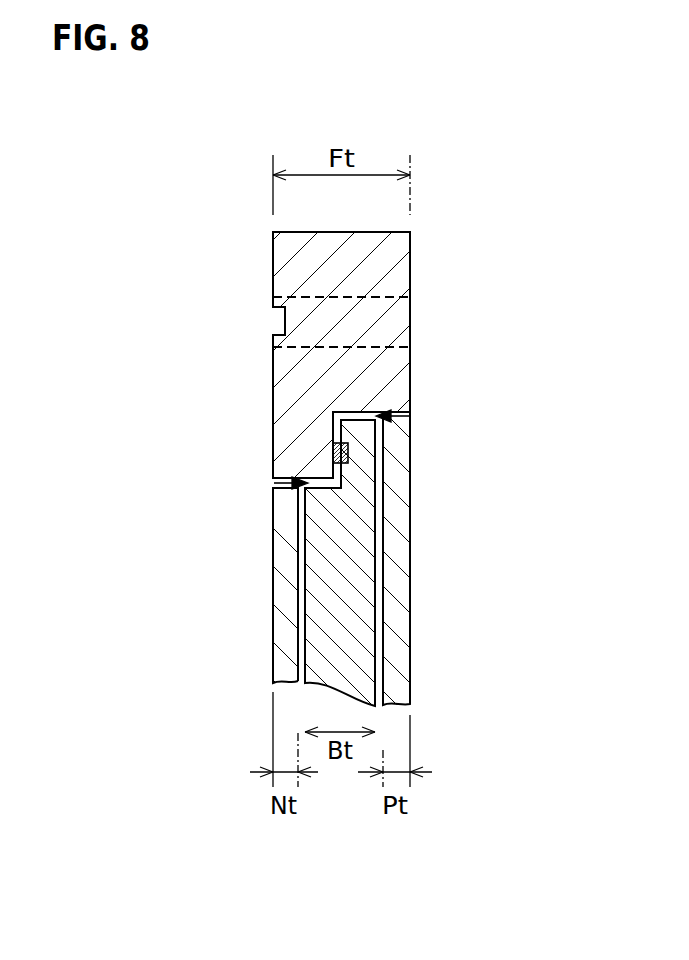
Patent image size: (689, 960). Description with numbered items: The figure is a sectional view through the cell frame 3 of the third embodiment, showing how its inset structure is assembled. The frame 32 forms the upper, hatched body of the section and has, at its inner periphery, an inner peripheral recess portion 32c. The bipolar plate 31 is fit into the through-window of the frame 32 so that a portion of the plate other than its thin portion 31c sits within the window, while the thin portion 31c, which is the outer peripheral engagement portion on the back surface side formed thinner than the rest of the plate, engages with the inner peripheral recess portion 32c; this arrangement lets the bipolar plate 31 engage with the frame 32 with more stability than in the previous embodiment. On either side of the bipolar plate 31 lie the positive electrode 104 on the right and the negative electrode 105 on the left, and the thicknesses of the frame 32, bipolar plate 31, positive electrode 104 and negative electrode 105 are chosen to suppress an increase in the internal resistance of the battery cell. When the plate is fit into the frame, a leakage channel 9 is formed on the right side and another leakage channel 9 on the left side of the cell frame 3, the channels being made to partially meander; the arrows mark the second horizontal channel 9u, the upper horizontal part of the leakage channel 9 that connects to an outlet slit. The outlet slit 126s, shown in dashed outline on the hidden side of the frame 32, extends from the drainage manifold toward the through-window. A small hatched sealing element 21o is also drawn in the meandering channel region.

The cell frame 3 is at (250, 205).
The frame 32 is at (410, 278).
The outlet slit 126s is at (285, 322).
The inner peripheral recess portion 32c is at (333, 438).
The seal member 21o is at (338, 448).
The second horizontal channel 9u is at (415, 417).
The leakage channel 9 is at (335, 453).
The negative electrode 105 is at (273, 553).
The bipolar plate 31 is at (340, 653).
The thin portion 31c is at (367, 465).
The positive electrode 104 is at (402, 624).